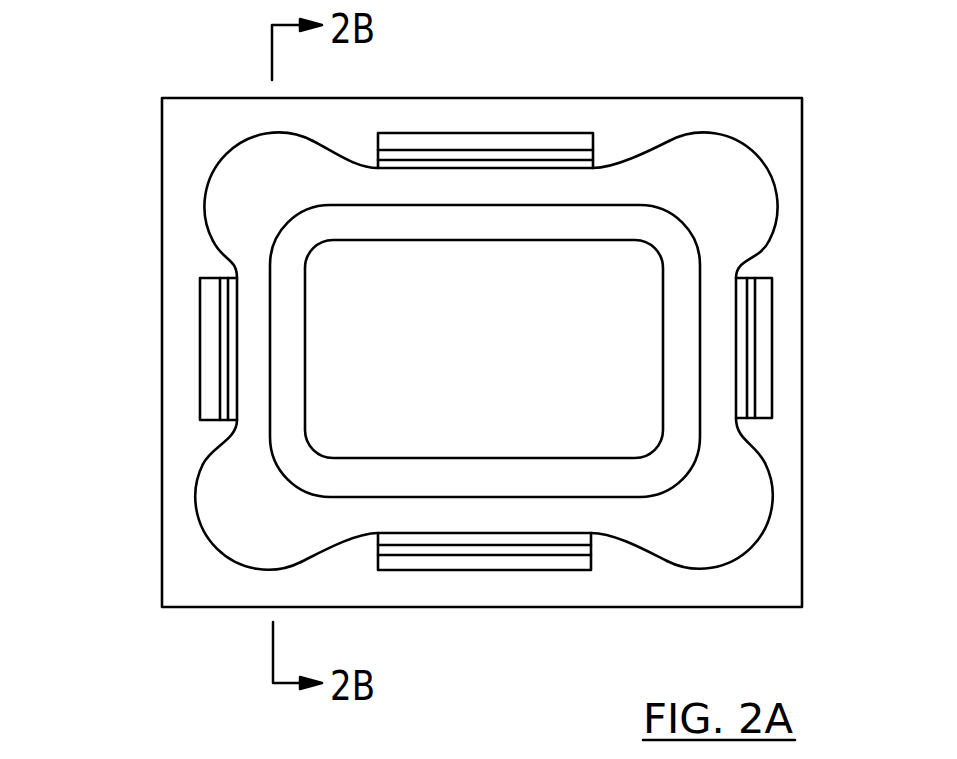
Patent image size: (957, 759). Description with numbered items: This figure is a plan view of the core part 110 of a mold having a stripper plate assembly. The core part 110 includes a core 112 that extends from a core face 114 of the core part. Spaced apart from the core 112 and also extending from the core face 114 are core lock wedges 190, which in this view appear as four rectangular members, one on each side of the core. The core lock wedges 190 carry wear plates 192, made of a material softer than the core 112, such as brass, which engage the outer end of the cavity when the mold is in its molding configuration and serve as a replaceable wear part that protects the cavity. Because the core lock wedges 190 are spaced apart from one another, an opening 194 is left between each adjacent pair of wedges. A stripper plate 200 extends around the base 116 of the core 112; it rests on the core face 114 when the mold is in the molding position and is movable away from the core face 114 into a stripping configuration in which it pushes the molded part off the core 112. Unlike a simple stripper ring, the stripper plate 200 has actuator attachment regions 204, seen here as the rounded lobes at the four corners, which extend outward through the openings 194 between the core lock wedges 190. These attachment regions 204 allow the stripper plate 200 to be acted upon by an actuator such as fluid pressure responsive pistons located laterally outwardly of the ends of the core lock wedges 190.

The core part 110 is at (843, 404).
The core 112 is at (485, 343).
The core face 114 is at (205, 135).
The base 116 is at (714, 482).
The core lock wedges 190 is at (520, 143).
The wear plates 192 is at (598, 158).
The opening 194 is at (178, 252).
The stripper plate 200 is at (433, 182).
The actuator attachment regions 204 is at (240, 177).